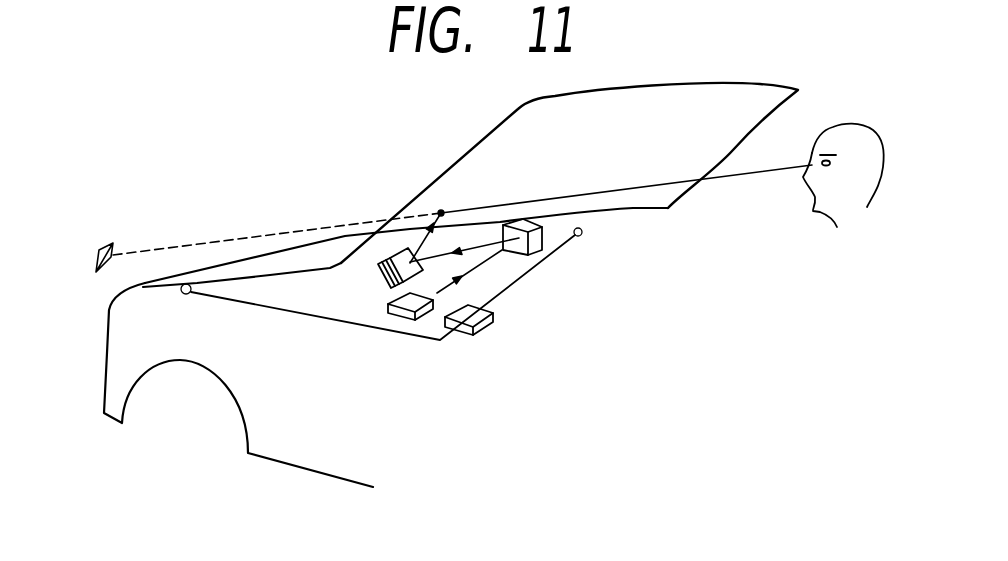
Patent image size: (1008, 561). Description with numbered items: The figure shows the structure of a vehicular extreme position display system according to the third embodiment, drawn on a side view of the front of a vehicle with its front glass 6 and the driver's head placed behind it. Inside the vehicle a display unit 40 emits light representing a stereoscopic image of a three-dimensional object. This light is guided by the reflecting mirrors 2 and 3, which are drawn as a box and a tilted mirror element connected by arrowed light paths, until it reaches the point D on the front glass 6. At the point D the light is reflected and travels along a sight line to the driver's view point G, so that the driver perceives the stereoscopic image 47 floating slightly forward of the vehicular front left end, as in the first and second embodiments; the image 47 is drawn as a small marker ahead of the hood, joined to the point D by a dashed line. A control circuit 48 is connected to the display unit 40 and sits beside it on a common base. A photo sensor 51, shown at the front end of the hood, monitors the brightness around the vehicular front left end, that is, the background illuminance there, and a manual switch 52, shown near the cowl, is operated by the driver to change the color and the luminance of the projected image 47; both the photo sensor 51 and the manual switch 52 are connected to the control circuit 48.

The reflecting mirror 2 is at (536, 250).
The reflecting mirror 3 is at (384, 277).
The windshield 6 is at (502, 147).
The display unit 40 is at (402, 313).
The stereoscopic image 47 is at (103, 243).
The control circuit 48 is at (460, 327).
The photo sensor 51 is at (187, 284).
The manual switch 52 is at (582, 237).
The point on the front glass D is at (445, 195).
The driver's view point G is at (827, 167).